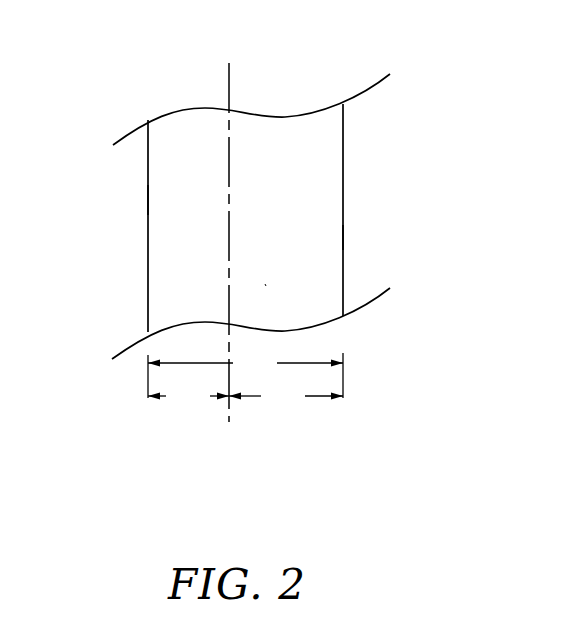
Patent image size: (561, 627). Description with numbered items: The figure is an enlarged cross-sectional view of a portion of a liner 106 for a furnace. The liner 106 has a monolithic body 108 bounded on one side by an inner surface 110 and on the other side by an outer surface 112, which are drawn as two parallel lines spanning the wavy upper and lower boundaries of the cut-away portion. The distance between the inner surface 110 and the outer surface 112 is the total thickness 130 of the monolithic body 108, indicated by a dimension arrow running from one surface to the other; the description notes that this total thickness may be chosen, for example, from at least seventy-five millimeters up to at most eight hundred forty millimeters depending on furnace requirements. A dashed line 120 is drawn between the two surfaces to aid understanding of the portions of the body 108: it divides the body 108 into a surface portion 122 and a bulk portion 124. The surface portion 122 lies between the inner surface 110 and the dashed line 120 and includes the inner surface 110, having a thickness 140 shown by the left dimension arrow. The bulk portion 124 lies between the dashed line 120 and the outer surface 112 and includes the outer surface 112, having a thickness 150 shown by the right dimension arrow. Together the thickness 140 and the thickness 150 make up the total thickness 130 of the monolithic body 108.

The liner 106 is at (318, 128).
The monolithic body 108 is at (265, 282).
The inner surface 110 is at (148, 273).
The outer surface 112 is at (343, 198).
The dashed line 120 is at (228, 92).
The surface portion 122 is at (157, 202).
The bulk portion 124 is at (313, 238).
The total thickness 130 is at (245, 365).
The thickness of the surface portion 140 is at (188, 397).
The thickness of the bulk portion 150 is at (286, 397).